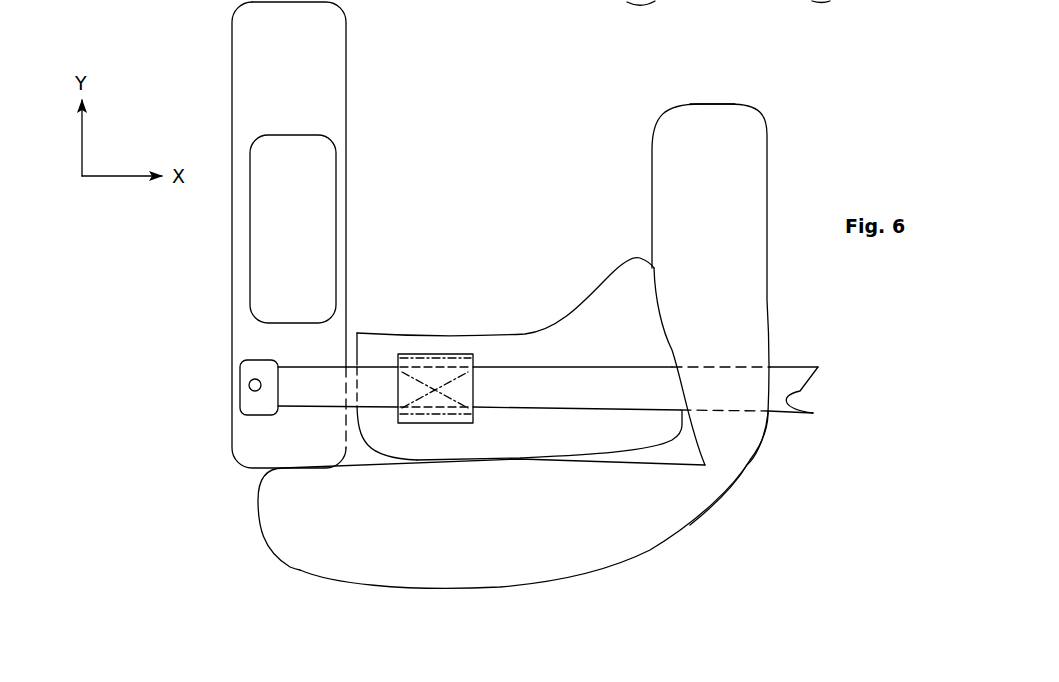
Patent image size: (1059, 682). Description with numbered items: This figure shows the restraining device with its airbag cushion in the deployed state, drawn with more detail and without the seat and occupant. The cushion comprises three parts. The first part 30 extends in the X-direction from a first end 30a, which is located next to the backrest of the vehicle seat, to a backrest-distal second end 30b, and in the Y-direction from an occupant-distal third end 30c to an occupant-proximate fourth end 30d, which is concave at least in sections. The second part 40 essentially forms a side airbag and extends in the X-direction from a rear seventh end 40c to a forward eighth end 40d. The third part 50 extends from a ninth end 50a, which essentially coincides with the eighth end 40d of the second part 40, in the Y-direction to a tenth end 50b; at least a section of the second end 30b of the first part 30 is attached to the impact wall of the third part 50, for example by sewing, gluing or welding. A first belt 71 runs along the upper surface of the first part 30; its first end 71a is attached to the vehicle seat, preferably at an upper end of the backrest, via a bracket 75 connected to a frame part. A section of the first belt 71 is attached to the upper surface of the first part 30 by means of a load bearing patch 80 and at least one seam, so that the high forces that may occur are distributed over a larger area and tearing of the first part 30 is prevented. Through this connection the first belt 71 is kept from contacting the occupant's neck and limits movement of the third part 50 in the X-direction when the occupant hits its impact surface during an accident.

The first part 30 is at (577, 322).
The first end 30a is at (287, 349).
The second end 30b is at (672, 350).
The third end 30c is at (522, 460).
The fourth end 30d is at (489, 327).
The second part 40 is at (583, 538).
The seventh end 40c is at (260, 500).
The eighth end 40d is at (747, 480).
The third part 50 is at (738, 208).
The ninth end 50a is at (729, 469).
The tenth end 50b is at (725, 102).
The first belt 71 is at (800, 390).
The first end 71a is at (283, 382).
The bracket 75 is at (252, 368).
The load bearing patch 80 is at (410, 372).